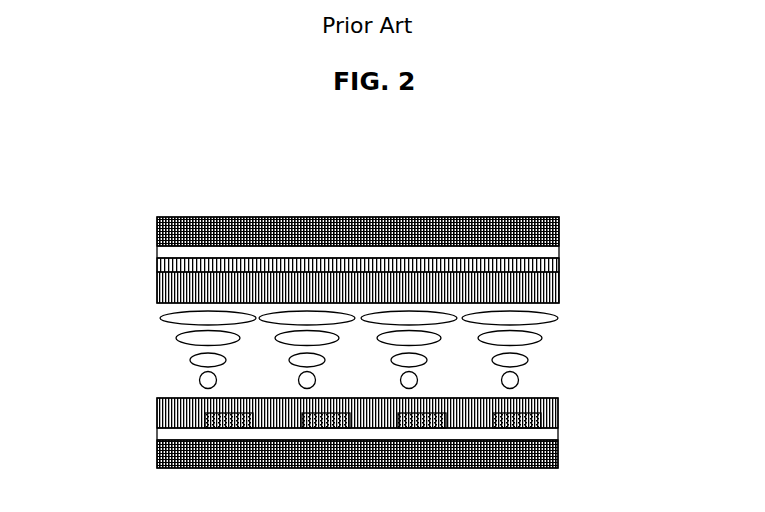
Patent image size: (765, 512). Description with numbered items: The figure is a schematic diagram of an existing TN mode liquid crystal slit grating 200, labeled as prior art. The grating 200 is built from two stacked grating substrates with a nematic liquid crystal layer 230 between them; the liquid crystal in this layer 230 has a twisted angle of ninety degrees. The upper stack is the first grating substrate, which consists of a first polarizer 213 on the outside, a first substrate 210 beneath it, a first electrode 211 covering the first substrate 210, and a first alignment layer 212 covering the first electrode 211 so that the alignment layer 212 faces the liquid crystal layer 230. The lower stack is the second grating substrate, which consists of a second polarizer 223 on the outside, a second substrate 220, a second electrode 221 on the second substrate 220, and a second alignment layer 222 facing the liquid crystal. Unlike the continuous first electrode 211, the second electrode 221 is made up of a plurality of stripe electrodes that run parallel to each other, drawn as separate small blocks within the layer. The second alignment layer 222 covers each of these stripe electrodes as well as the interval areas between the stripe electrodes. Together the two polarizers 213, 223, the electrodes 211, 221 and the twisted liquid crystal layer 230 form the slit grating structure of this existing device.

The TN mode liquid crystal slit grating 200 is at (305, 205).
The first substrate 210 is at (543, 252).
The first electrode 211 is at (538, 267).
The first alignment layer 212 is at (540, 287).
The first polarizer 213 is at (545, 232).
The second substrate 220 is at (530, 433).
The second electrode 221 is at (558, 417).
The second alignment layer 222 is at (558, 402).
The second polarizer 223 is at (530, 452).
The nematic liquid crystal layer 230 is at (192, 338).